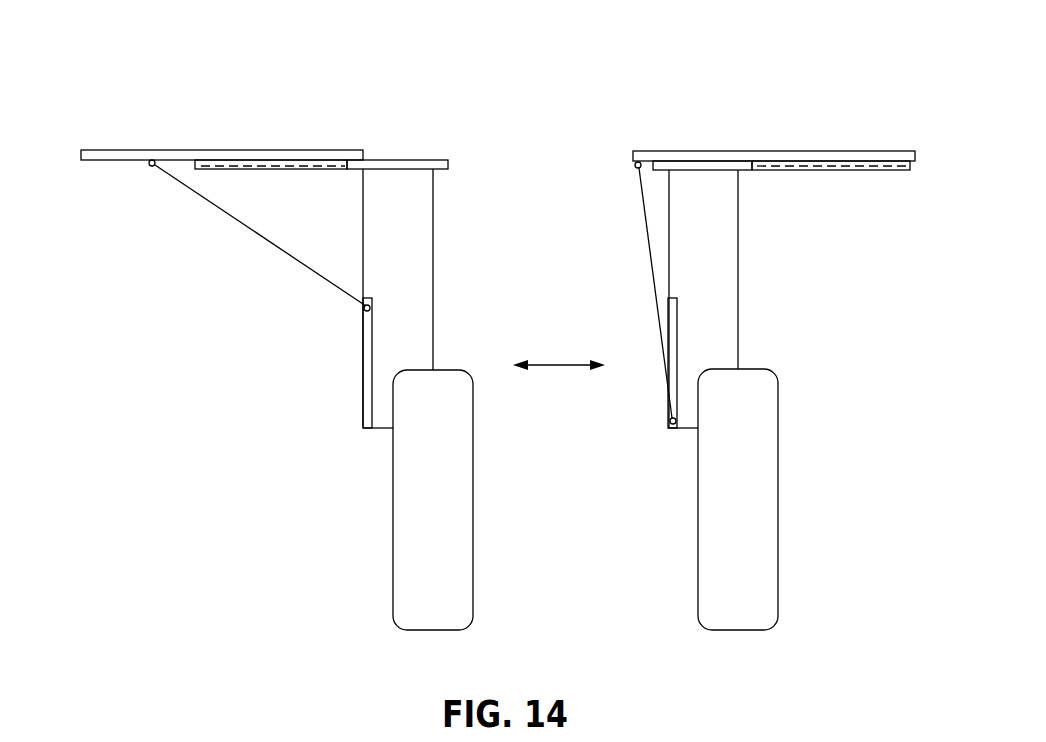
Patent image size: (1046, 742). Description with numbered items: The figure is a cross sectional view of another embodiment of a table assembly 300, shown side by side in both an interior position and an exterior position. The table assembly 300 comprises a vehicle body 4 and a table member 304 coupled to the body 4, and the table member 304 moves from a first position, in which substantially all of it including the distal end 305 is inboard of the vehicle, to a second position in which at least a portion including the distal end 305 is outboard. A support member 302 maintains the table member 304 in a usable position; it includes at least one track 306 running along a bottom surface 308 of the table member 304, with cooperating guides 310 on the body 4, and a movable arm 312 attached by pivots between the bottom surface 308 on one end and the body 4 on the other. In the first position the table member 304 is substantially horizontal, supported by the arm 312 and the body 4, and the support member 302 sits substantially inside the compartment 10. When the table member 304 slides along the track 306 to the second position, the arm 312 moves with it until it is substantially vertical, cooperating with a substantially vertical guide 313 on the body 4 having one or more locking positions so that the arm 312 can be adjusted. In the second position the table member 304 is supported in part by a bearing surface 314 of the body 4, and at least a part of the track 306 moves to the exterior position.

The vehicle body 4 is at (405, 293).
The compartment 10 is at (192, 327).
The table assembly 300 is at (186, 102).
The support member 302 is at (186, 207).
The table member 304 is at (286, 150).
The distal end 305 is at (99, 150).
The track 306 is at (313, 170).
The bottom surface 308 is at (205, 160).
The guide 310 is at (415, 160).
The movable arm 312 is at (338, 289).
The vertical guide 313 is at (368, 374).
The bearing surface 314 is at (397, 170).